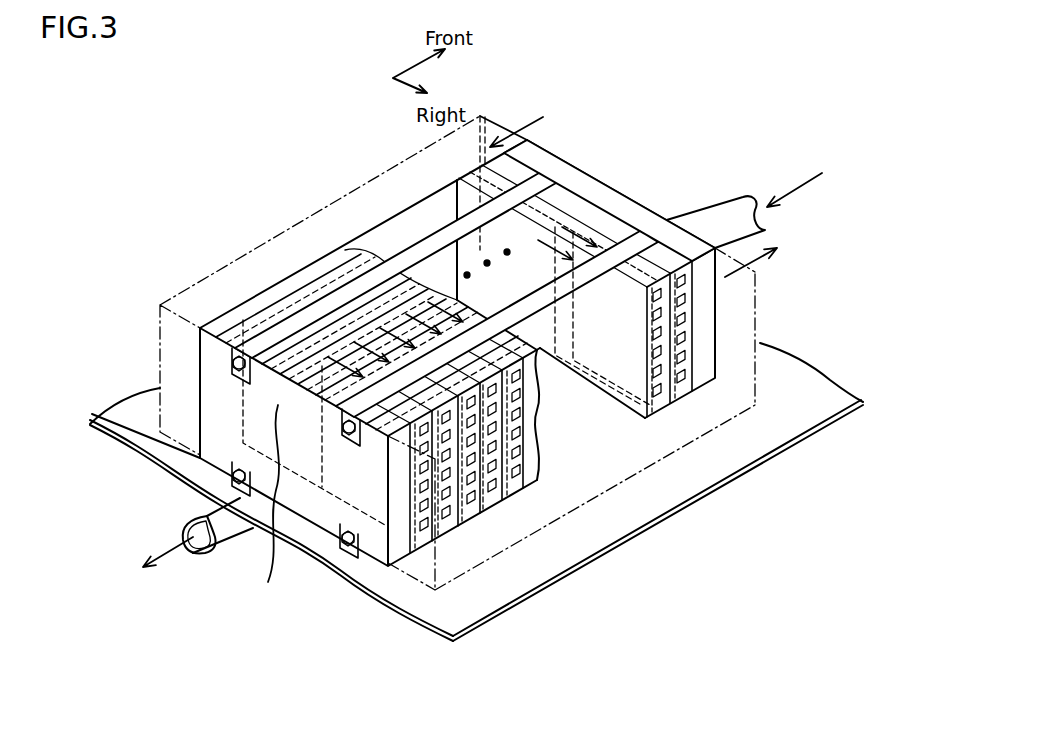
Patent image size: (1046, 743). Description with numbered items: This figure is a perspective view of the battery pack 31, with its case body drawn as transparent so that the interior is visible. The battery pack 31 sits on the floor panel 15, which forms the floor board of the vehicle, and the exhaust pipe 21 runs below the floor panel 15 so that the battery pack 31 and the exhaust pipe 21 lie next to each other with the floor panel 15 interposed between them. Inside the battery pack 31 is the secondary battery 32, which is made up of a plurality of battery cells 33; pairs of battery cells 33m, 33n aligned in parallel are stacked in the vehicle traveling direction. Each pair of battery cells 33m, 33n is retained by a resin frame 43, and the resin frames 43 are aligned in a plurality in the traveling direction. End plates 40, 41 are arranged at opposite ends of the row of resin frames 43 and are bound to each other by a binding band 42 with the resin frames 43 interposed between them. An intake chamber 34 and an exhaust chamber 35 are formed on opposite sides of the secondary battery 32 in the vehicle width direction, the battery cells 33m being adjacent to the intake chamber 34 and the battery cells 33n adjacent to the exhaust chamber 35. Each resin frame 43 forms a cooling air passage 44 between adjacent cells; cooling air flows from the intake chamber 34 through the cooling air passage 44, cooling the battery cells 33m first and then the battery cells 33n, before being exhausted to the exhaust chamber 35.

The floor panel 15 is at (733, 452).
The exhaust pipe 21 is at (230, 530).
The battery pack 31 is at (215, 226).
The secondary battery 32 is at (268, 582).
The battery cell 33 is at (457, 304).
The battery cell 33m is at (540, 190).
The battery cell 33n is at (618, 235).
The intake chamber 34 is at (282, 250).
The exhaust chamber 35 is at (660, 513).
The end plate 40 is at (222, 332).
The end plate 41 is at (600, 187).
The binding band 42 is at (410, 250).
The resin frame 43 is at (493, 495).
The cooling air passage 44 is at (480, 482).